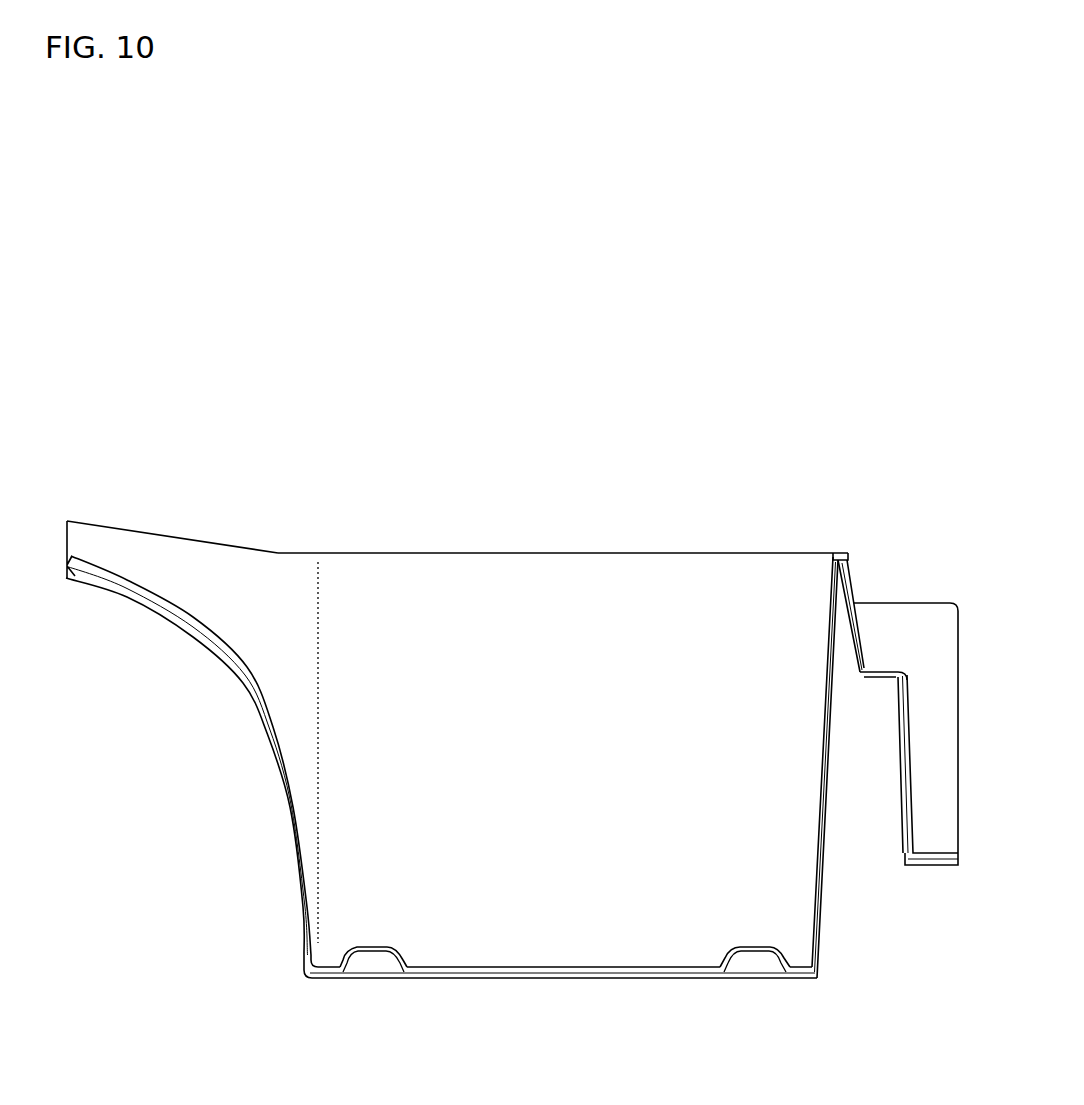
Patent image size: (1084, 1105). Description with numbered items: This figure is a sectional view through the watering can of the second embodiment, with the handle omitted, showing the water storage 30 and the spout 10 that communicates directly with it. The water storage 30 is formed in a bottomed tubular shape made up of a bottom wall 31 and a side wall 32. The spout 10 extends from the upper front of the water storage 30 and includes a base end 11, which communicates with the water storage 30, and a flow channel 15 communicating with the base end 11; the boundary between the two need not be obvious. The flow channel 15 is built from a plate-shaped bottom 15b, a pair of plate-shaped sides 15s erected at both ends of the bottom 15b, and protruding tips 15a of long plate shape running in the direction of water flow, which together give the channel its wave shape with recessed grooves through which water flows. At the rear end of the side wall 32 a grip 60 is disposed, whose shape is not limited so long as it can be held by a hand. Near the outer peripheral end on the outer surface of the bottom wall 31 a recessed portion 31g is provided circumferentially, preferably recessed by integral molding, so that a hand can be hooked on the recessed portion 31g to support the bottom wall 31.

The spout 10 is at (353, 384).
The base end 11 is at (316, 544).
The flow channel 15 is at (243, 532).
The protruding tip 15a is at (70, 570).
The side 15s is at (185, 583).
The bottom 15b is at (160, 607).
The water storage 30 is at (686, 456).
The bottom wall 31 is at (550, 968).
The recessed portion 31g is at (375, 958).
The side wall 32 is at (818, 922).
The grip 60 is at (903, 632).